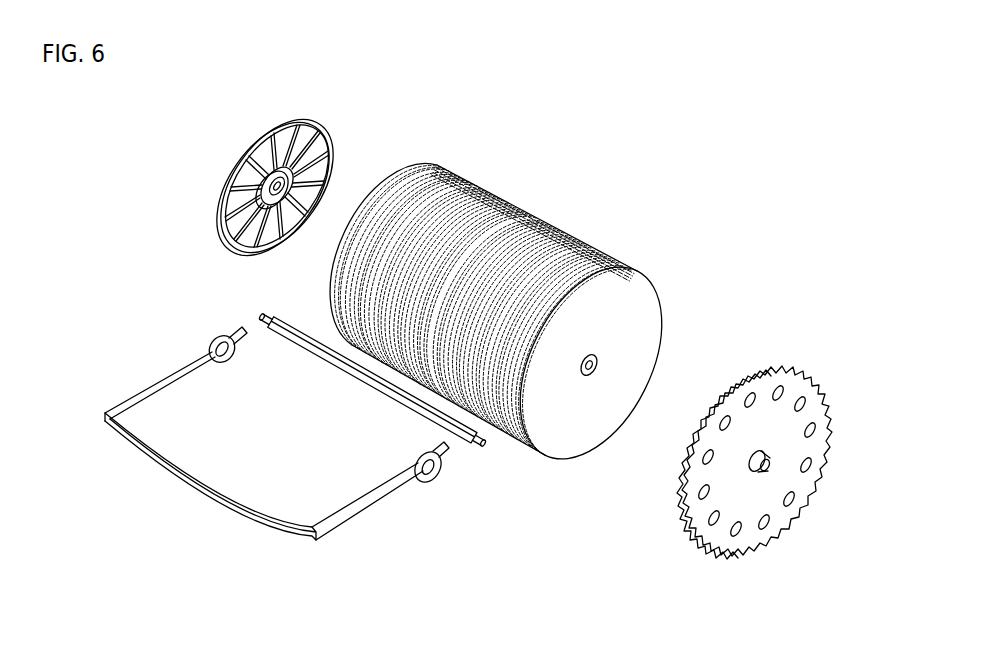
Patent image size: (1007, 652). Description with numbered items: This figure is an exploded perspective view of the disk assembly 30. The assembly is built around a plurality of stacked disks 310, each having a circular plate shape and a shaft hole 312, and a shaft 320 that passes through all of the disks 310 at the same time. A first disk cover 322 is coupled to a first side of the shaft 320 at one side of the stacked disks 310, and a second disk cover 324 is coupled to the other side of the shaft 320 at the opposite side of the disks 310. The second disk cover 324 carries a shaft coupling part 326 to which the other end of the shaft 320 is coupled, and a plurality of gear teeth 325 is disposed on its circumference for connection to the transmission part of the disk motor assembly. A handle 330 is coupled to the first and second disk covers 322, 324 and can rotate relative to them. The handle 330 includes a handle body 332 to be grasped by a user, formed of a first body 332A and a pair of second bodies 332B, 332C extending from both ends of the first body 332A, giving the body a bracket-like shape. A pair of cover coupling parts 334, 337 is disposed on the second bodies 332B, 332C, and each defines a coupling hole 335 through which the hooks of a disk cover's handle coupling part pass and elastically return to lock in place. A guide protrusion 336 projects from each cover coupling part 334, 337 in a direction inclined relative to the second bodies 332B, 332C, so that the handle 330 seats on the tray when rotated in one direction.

The disk assembly 30 is at (529, 297).
The stacked disks 310 is at (657, 310).
The shaft hole 312 is at (597, 369).
The shaft 320 is at (347, 373).
The first disk cover 322 is at (272, 125).
The second disk cover 324 is at (776, 460).
The gear teeth 325 is at (782, 365).
The shaft coupling part 326 is at (758, 477).
The handle 330 is at (285, 454).
The handle body 332 is at (256, 492).
The first body 332A is at (223, 497).
The second body 332B is at (128, 412).
The second body 332C is at (352, 528).
The cover coupling part 334 is at (428, 492).
The coupling hole 335 is at (437, 478).
The guide protrusion 336 is at (447, 455).
The cover coupling part 337 is at (220, 335).